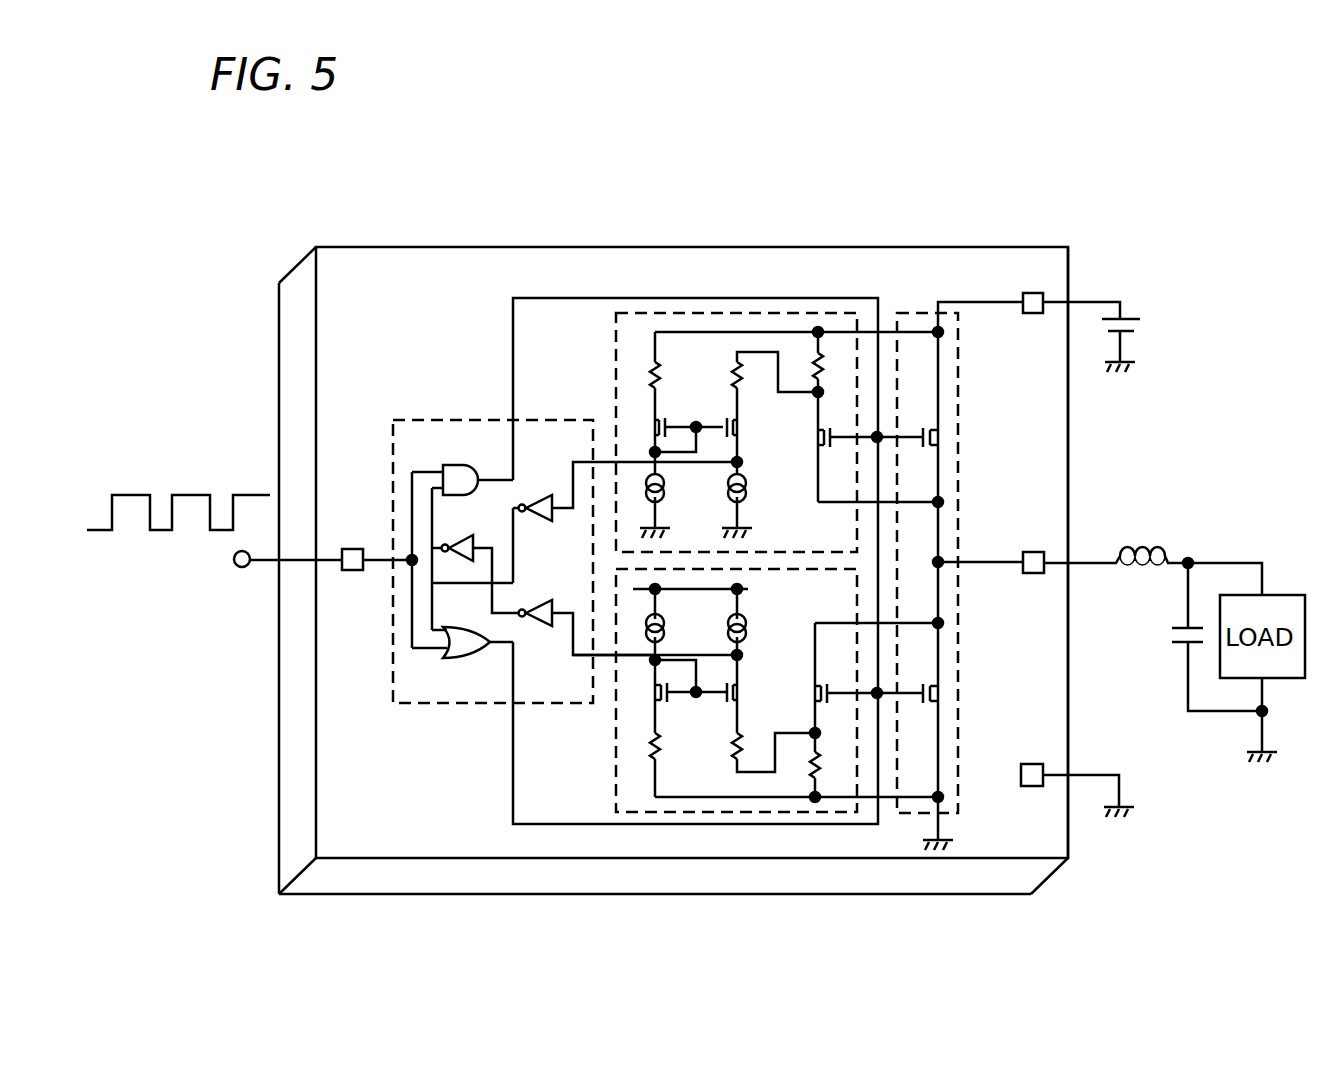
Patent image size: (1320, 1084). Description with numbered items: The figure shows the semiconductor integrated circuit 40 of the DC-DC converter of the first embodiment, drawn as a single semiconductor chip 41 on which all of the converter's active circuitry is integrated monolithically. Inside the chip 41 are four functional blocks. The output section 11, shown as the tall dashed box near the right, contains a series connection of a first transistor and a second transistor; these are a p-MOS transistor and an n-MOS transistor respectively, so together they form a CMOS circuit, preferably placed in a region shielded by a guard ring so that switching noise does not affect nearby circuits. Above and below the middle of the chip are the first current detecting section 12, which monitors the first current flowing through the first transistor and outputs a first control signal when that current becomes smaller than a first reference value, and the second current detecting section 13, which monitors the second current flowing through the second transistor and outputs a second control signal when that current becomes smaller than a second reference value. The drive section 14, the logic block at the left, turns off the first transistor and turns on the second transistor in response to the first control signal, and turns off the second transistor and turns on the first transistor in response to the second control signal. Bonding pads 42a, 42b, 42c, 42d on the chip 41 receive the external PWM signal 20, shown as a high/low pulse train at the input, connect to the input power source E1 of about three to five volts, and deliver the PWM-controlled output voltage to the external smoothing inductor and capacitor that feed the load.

The semiconductor integrated circuit 40 is at (1005, 207).
The semiconductor chip 41 is at (1071, 268).
The output section 11 is at (915, 313).
The first current detecting section 12 is at (752, 313).
The second current detecting section 13 is at (690, 812).
The drive section 14 is at (435, 420).
The external PWM signal 20 is at (205, 493).
The bonding pad 42a is at (1033, 313).
The bonding pad 42b is at (1033, 573).
The bonding pad 42c is at (1030, 786).
The bonding pad 42d is at (355, 571).
The input power source E1 is at (1133, 306).